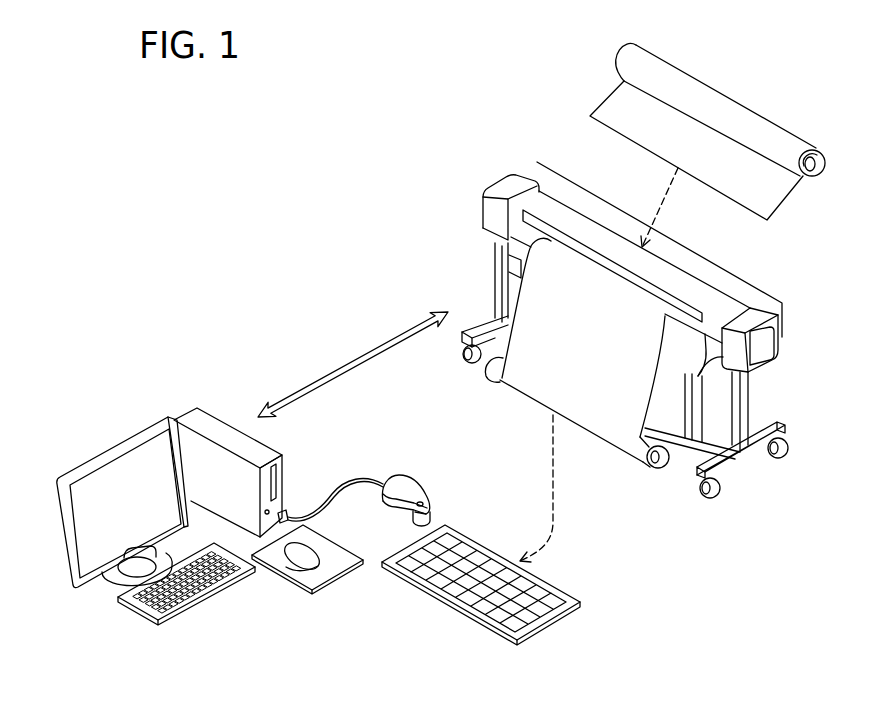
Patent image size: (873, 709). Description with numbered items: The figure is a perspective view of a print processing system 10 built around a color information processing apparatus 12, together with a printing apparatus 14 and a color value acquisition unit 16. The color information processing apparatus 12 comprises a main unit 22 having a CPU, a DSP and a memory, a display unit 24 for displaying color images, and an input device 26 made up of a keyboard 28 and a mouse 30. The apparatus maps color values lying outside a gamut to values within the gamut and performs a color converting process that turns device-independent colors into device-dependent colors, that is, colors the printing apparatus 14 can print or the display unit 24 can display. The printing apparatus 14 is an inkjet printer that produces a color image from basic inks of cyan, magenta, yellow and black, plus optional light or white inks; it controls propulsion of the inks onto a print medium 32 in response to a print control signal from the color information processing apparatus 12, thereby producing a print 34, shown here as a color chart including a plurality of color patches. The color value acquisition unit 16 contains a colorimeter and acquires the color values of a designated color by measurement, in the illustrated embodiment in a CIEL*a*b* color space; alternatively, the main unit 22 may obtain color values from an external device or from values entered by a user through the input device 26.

The print processing system 10 is at (245, 133).
The color information processing apparatus 12 is at (107, 432).
The printing apparatus 14 is at (757, 303).
The color value acquisition unit 16 is at (407, 487).
The main unit 22 is at (213, 423).
The display unit 24 is at (86, 547).
The input device 26 is at (132, 618).
The keyboard 28 is at (182, 613).
The mouse 30 is at (307, 562).
The print medium 32 is at (677, 78).
The print 34 is at (453, 603).